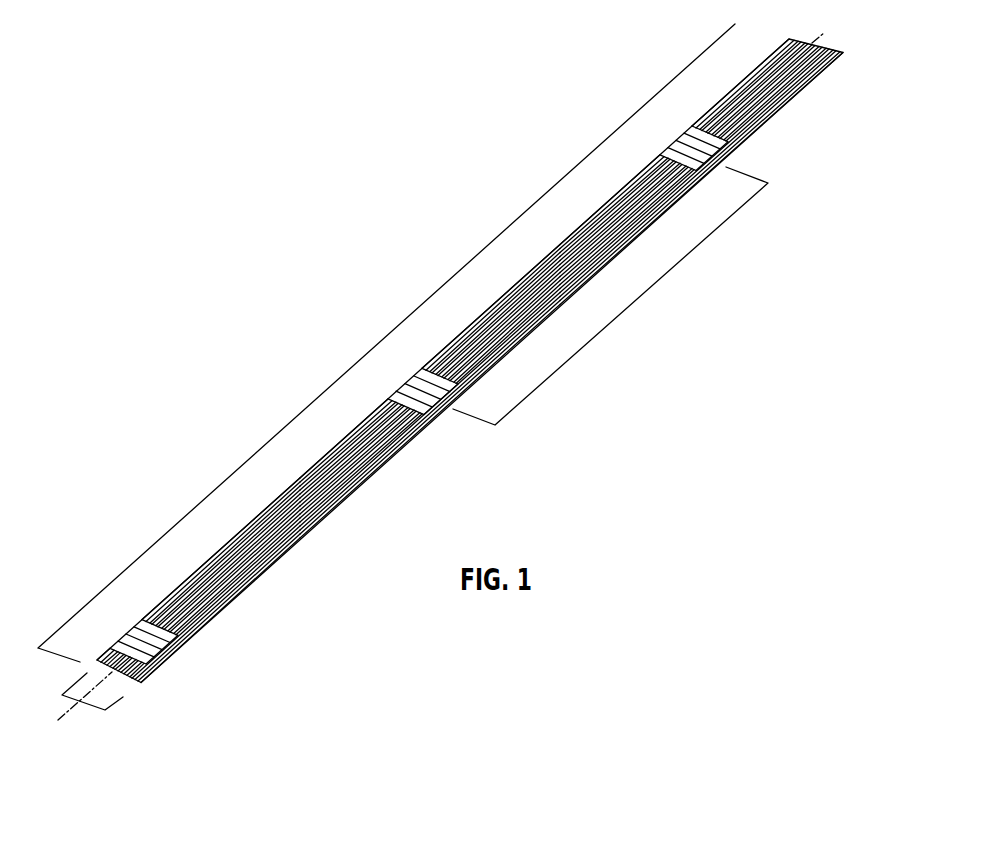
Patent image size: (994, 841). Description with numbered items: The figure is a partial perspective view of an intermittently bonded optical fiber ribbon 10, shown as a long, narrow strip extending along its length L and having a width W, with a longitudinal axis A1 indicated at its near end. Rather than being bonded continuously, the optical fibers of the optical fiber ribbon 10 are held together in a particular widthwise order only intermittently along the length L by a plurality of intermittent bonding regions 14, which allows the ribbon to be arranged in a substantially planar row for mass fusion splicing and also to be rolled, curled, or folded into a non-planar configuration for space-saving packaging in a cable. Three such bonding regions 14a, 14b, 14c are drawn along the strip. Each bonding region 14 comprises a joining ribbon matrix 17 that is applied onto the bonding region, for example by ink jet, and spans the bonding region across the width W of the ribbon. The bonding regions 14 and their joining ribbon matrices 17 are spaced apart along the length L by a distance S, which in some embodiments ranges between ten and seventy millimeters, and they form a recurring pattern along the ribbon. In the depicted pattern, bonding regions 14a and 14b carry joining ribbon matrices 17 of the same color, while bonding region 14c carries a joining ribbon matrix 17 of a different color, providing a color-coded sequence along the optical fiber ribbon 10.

The optical fiber ribbon 10 is at (870, 125).
The intermittent bonding region 14 is at (483, 412).
The bonding region 14a is at (796, 187).
The bonding region 14b is at (508, 438).
The bonding region 14c is at (186, 680).
The joining ribbon matrix 17 is at (690, 140).
The length L is at (378, 343).
The distance S is at (610, 296).
The width W is at (123, 698).
The longitudinal axis A1 is at (435, 384).